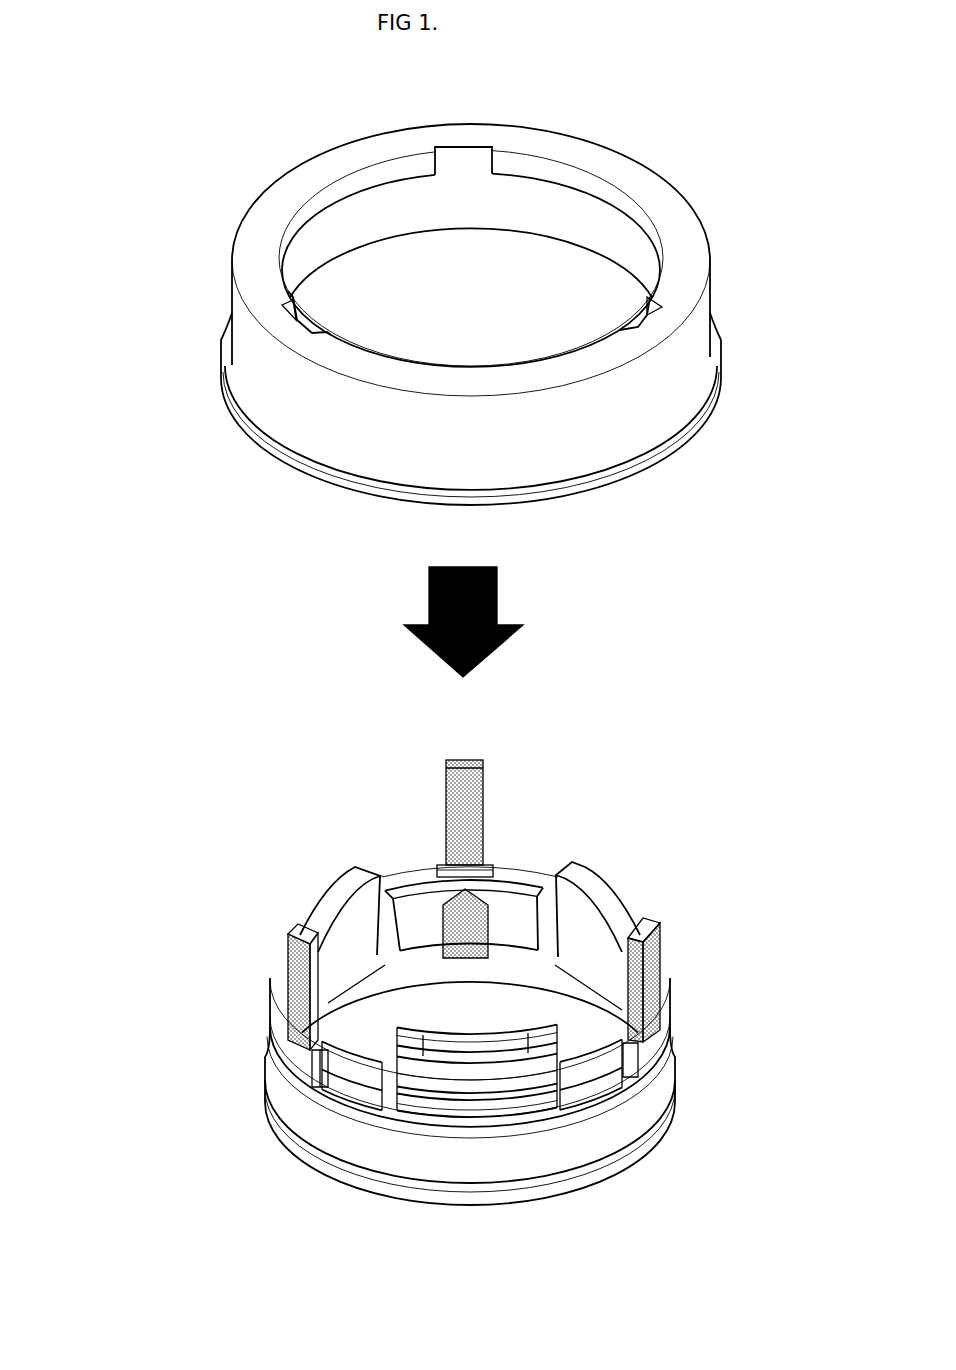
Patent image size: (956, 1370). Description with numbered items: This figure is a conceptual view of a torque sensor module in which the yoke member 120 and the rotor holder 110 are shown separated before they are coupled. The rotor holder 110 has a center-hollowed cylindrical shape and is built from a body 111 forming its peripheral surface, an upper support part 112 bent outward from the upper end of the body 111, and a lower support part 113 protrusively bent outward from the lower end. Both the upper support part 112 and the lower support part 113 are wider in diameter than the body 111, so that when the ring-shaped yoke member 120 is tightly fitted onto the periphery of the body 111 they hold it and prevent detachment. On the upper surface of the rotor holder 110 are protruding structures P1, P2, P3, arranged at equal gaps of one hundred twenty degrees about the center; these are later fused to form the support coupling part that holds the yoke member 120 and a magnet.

The yoke member 120 is at (702, 327).
The rotor holder 110 is at (378, 1033).
The body 111 is at (272, 1068).
The upper support part 112 is at (275, 1108).
The lower support part 113 is at (275, 1008).
The protruding structure P1 is at (285, 947).
The protruding structure P2 is at (473, 792).
The protruding structure P3 is at (662, 942).